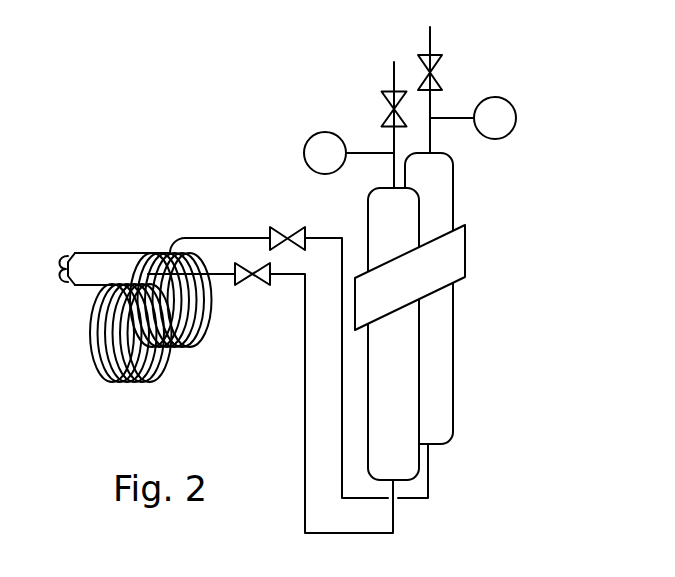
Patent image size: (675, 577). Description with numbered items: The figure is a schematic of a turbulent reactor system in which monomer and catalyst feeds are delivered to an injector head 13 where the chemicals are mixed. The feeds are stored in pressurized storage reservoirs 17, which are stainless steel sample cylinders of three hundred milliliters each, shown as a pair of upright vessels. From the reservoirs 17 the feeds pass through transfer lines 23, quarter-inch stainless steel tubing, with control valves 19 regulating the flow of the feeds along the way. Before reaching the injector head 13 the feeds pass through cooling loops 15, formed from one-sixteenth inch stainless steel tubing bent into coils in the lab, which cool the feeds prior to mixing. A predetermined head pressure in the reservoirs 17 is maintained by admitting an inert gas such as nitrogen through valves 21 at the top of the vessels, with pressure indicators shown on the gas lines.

The injector head 13 is at (145, 261).
The cooling loops 15 is at (155, 252).
The pressurized storage reservoirs 17 is at (453, 337).
The control valves 19 is at (295, 228).
The valves 21 is at (403, 115).
The transfer lines 23 is at (393, 525).